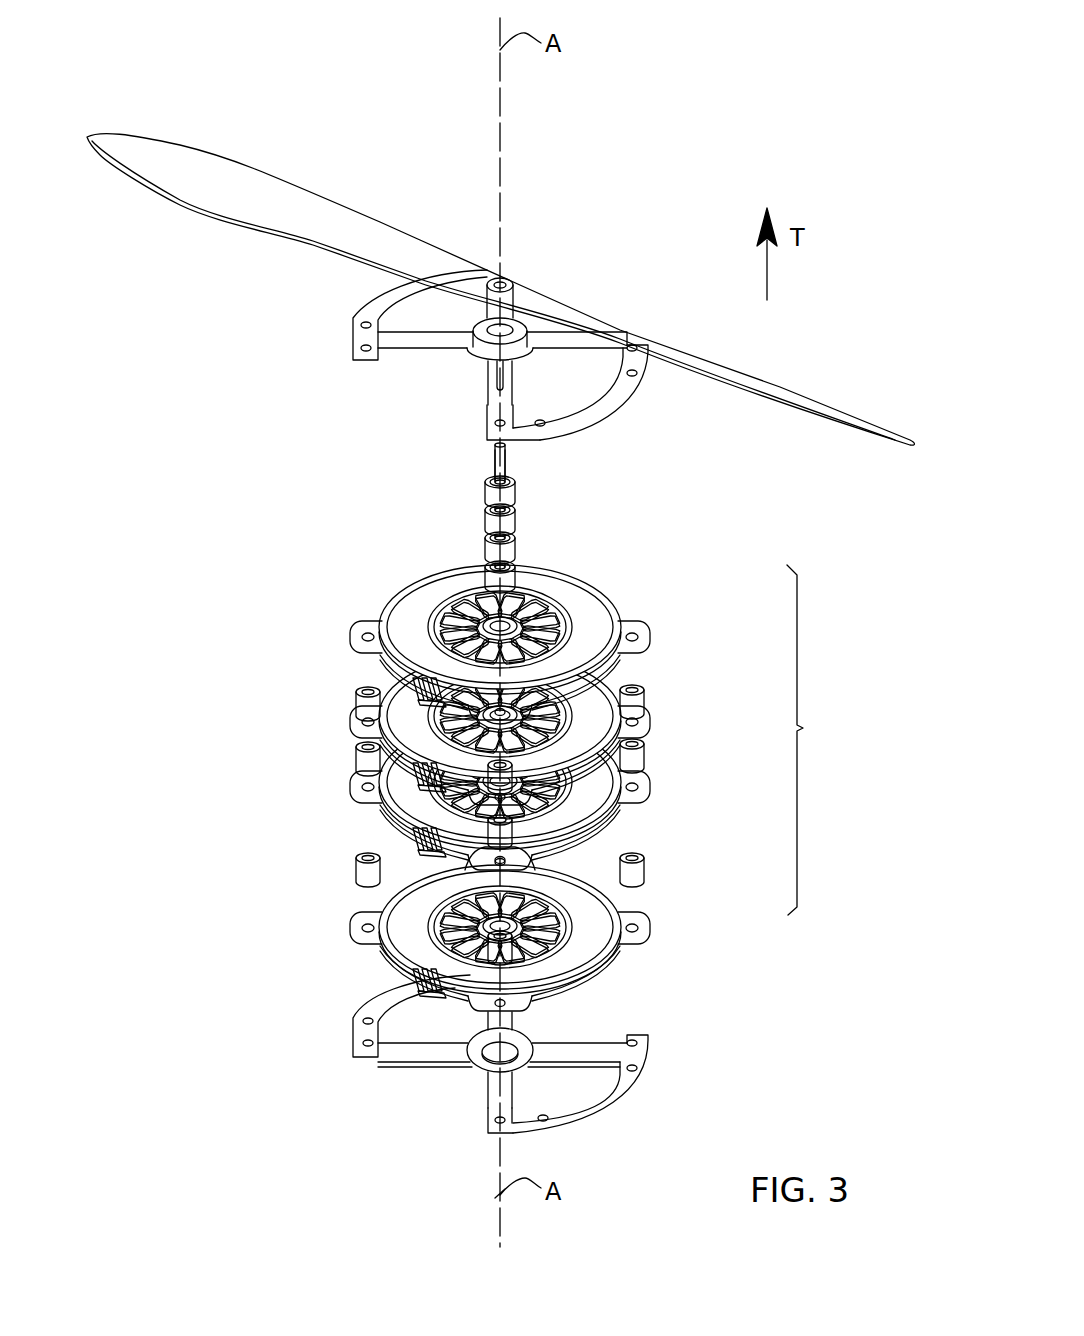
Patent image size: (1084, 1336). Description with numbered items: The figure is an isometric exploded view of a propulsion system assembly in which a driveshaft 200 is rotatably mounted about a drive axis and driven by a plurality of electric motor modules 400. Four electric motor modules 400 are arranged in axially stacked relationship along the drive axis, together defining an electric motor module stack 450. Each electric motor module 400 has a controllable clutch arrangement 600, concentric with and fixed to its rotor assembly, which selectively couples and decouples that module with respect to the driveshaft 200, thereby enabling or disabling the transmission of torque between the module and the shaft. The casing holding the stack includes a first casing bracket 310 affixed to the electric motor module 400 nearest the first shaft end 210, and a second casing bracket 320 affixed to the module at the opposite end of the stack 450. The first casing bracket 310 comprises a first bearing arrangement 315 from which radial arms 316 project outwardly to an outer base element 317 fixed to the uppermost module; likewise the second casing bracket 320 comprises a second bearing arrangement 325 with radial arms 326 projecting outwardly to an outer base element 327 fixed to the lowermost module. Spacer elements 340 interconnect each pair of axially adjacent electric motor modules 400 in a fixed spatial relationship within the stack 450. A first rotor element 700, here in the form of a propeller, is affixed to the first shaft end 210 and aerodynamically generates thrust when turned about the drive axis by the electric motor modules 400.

The first rotor element 700 is at (268, 188).
The first casing bracket 310 is at (424, 355).
The outer base element 317 is at (357, 330).
The radial arms 316 is at (418, 352).
The first bearing arrangement 315 is at (470, 345).
The driveshaft 200 is at (506, 458).
The first shaft end 210 is at (493, 452).
The controllable clutch arrangement 600 is at (508, 582).
The electric motor module 400 is at (590, 635).
The electric motor module stack 450 is at (822, 740).
The spacer elements 340 is at (362, 864).
The second casing bracket 320 is at (419, 1046).
The outer base element 327 is at (370, 1003).
The radial arms 326 is at (423, 1065).
The second bearing arrangement 325 is at (478, 1073).